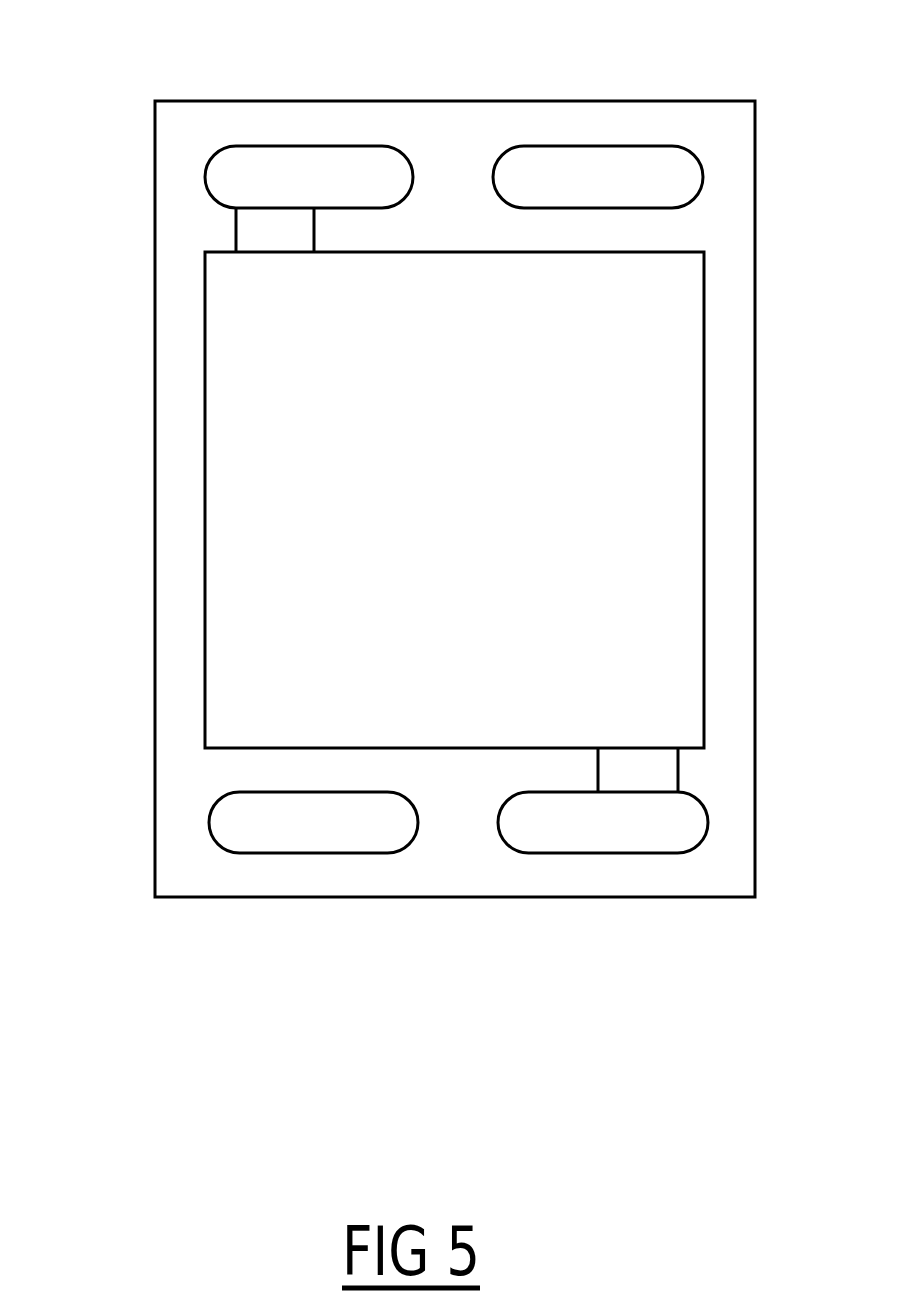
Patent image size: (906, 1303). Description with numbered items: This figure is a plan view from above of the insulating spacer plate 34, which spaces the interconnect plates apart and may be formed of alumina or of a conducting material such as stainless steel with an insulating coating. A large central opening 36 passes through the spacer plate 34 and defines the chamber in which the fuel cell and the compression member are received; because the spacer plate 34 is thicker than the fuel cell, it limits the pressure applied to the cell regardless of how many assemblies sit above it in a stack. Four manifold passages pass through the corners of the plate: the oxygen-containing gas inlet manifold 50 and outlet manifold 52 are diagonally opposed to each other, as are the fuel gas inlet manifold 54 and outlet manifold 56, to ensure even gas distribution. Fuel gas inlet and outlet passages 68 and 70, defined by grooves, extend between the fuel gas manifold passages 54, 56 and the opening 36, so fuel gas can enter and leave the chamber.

The insulating spacer plate 34 is at (155, 481).
The opening 36 is at (704, 473).
The oxygen-containing gas inlet manifold 50 is at (585, 174).
The oxygen-containing gas outlet manifold 52 is at (320, 833).
The fuel gas inlet manifold 54 is at (304, 178).
The fuel gas outlet manifold 56 is at (605, 835).
The fuel gas inlet passage 68 is at (256, 227).
The fuel gas outlet passage 70 is at (645, 772).